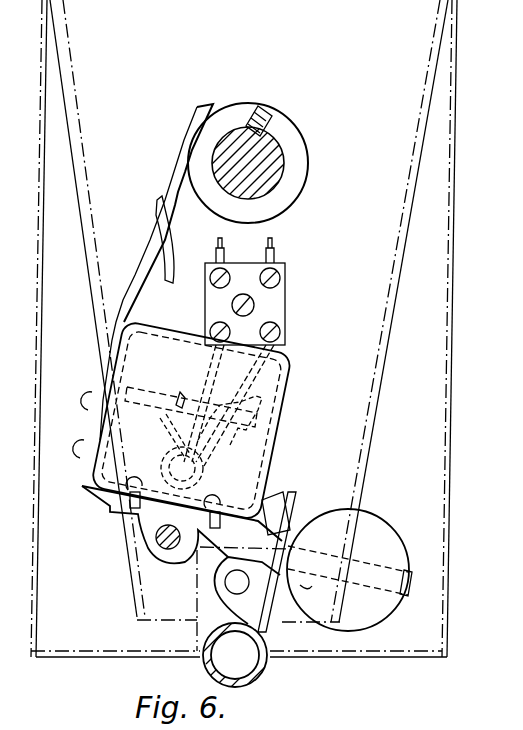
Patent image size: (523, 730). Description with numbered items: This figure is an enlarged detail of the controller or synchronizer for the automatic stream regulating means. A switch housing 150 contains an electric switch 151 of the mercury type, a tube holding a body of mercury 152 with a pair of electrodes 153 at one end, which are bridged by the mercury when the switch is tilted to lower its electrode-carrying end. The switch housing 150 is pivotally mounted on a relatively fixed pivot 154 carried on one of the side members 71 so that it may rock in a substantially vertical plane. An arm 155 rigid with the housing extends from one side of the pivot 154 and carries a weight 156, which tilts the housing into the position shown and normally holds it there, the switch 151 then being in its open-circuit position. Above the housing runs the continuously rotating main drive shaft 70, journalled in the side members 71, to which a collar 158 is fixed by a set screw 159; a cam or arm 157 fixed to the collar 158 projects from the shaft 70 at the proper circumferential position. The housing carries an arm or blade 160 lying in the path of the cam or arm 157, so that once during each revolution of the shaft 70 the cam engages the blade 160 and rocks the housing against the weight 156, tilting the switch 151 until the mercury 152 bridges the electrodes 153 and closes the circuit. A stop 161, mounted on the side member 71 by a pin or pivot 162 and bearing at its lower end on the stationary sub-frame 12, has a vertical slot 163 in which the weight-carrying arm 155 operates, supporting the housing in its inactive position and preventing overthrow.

The sub-frame 12 is at (266, 666).
The main drive shaft 70 is at (282, 152).
The side members 71 is at (104, 305).
The switch housing 150 is at (290, 400).
The electric switch 151 is at (187, 392).
The body of mercury 152 is at (228, 447).
The electrodes 153 is at (182, 392).
The pivot 154 is at (160, 539).
The arm 155 is at (410, 578).
The weight 156 is at (382, 540).
The cam or arm 157 is at (172, 184).
The collar 158 is at (239, 112).
The set screw 159 is at (272, 116).
The arm or blade 160 is at (152, 220).
The stop 161 is at (268, 518).
The pin or pivot 162 is at (226, 585).
The vertical slot 163 is at (294, 522).